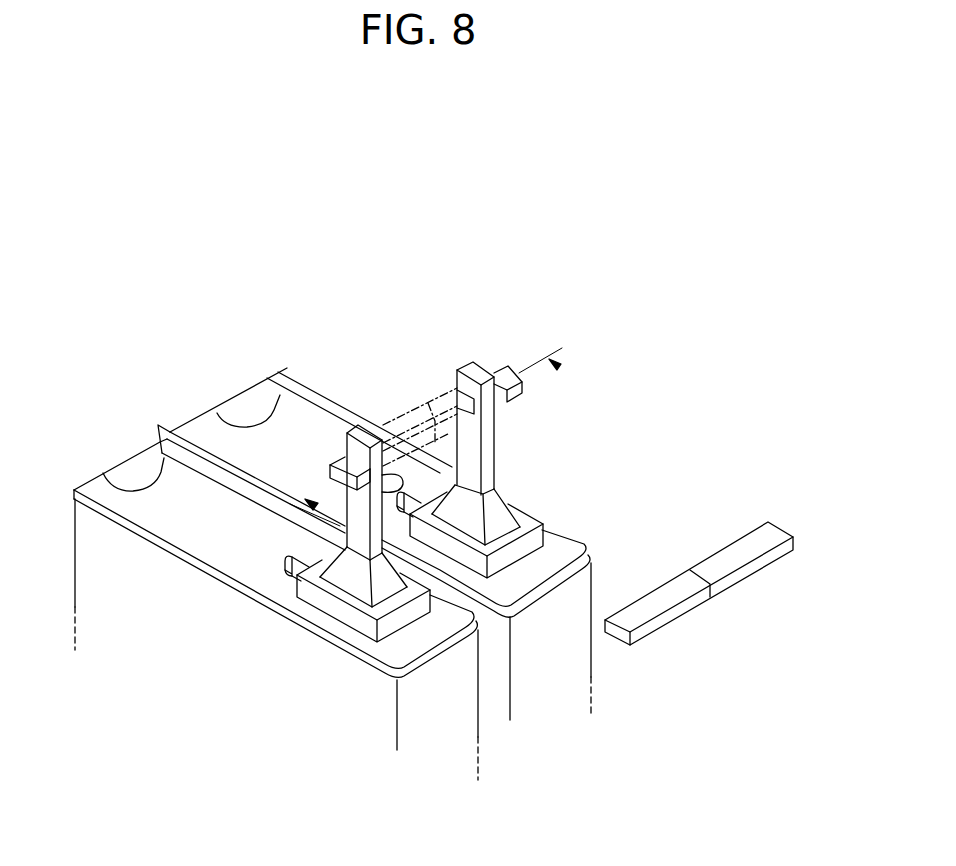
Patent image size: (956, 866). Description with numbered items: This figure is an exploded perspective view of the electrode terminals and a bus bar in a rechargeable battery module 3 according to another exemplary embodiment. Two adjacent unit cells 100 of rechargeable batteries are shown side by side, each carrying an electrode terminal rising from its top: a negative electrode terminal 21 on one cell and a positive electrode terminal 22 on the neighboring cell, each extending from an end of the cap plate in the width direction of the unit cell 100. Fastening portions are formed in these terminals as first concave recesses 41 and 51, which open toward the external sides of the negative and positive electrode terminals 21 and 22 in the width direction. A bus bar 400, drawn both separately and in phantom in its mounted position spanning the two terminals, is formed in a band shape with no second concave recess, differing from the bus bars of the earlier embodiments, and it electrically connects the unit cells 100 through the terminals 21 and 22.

The rechargeable battery module 3 is at (384, 216).
The unit cell 100 is at (447, 717).
The negative electrode terminal 21 is at (472, 364).
The positive electrode terminal 22 is at (360, 430).
The first concave recess 41 is at (456, 390).
The first concave recess 51 is at (333, 464).
The bus bar 400 is at (513, 405).